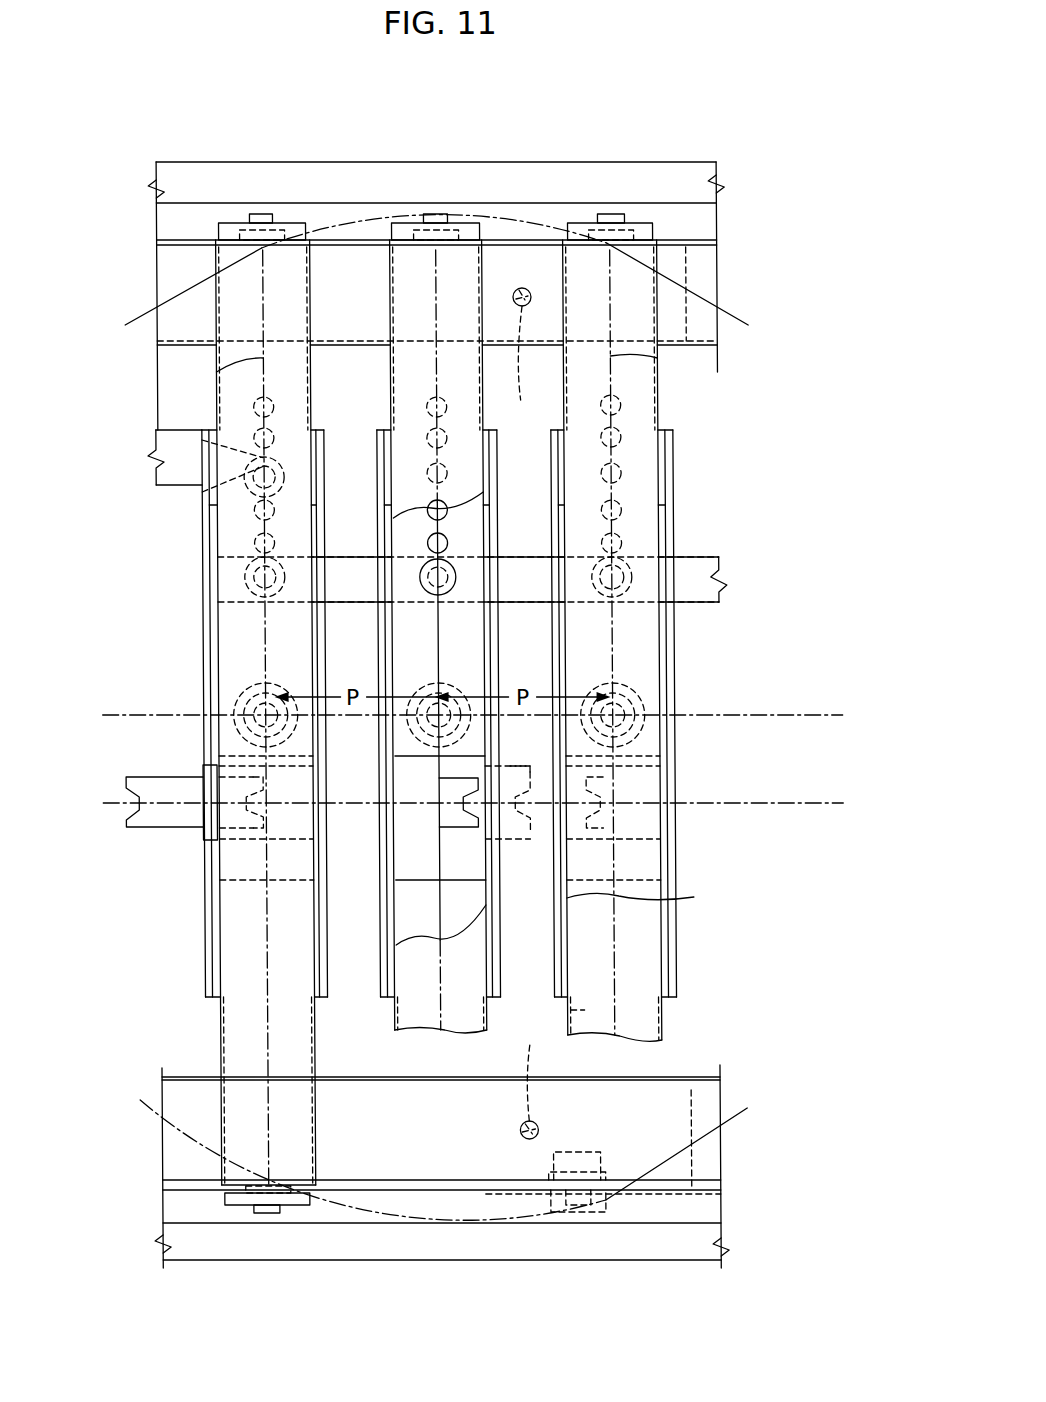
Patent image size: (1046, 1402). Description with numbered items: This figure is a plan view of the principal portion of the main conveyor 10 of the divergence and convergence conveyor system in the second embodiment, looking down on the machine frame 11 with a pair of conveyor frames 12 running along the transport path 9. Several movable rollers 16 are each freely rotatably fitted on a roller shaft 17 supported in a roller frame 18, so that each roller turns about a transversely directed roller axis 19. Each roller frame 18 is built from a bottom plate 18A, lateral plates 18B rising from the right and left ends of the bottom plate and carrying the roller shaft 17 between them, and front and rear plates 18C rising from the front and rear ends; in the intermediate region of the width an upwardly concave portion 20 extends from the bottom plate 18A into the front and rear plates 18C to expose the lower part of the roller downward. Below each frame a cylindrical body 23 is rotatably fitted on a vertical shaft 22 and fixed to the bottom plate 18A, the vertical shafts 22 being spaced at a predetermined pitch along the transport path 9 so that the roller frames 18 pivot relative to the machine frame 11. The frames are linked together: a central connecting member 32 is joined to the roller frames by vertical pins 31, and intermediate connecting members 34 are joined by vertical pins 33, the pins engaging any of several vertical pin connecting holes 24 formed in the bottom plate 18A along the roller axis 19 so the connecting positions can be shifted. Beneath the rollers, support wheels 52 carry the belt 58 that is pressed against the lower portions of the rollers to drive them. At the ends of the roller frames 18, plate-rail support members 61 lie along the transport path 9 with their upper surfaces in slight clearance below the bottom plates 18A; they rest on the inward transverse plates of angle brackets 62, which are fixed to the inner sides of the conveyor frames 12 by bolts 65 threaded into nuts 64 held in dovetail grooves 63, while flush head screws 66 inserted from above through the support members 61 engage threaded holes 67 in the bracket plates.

The transport path 9 is at (118, 710).
The main conveyor 10 is at (502, 134).
The machine frame 11 is at (275, 1268).
The conveyor frames 12 is at (670, 182).
The movable rollers 16 is at (242, 1048).
The roller shafts 17 is at (262, 214).
The roller frames 18 is at (678, 467).
The bottom plate 18A is at (660, 1010).
The lateral plates 18B is at (585, 222).
The front and rear plates 18C is at (690, 897).
The roller axis 19 is at (263, 360).
The upwardly concave portion 20 is at (406, 762).
The vertical shafts 22 is at (250, 702).
The cylindrical bodies 23 is at (258, 692).
The vertical pin connecting holes 24 is at (446, 510).
The vertical pins 31 is at (445, 597).
The central connecting member 32 is at (717, 566).
The vertical pins 33 is at (216, 495).
The intermediate connecting members 34 is at (155, 462).
The support wheels 52 is at (210, 838).
The belt 58 is at (766, 800).
The support members 61 is at (705, 273).
The brackets 62 is at (182, 242).
The dovetail grooves 63 is at (700, 1193).
The nuts 64 is at (600, 1222).
The bolts 65 is at (590, 1150).
The flush head screws 66 is at (523, 288).
The threaded holes 67 is at (527, 713).